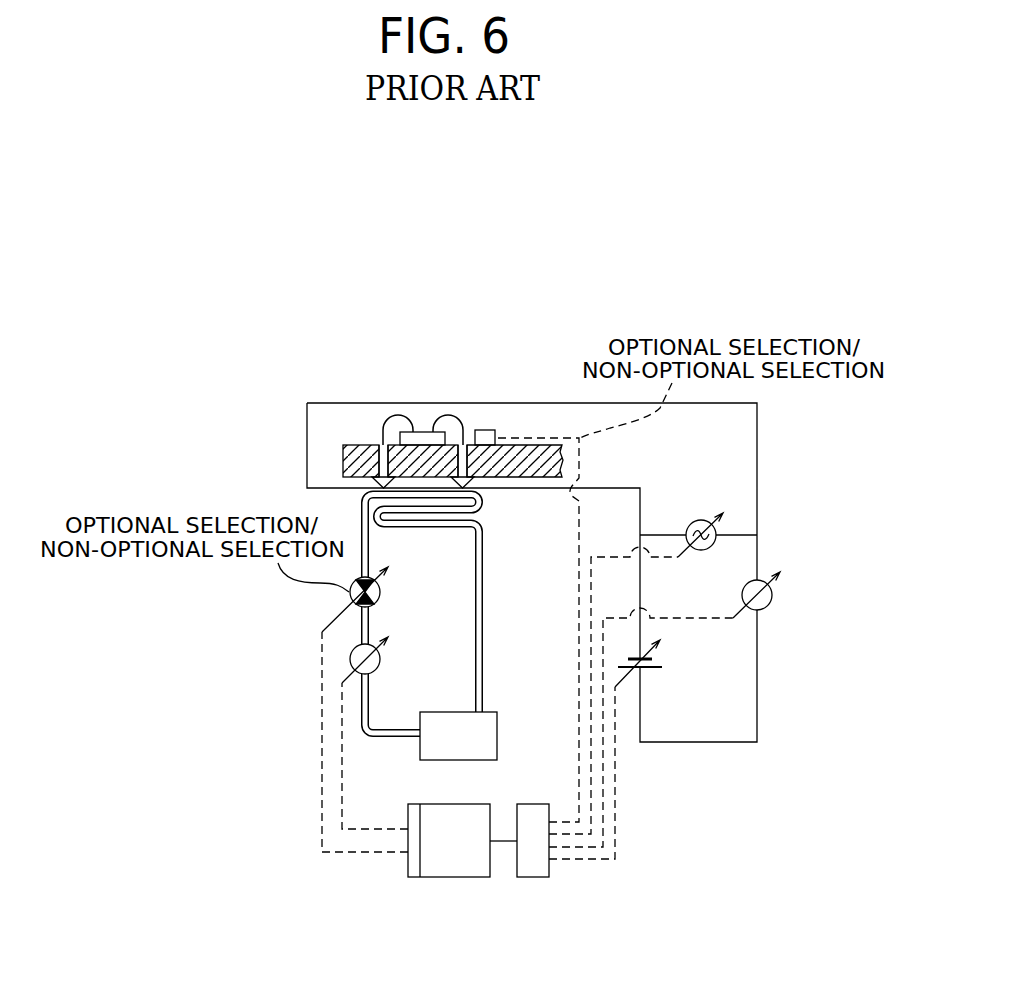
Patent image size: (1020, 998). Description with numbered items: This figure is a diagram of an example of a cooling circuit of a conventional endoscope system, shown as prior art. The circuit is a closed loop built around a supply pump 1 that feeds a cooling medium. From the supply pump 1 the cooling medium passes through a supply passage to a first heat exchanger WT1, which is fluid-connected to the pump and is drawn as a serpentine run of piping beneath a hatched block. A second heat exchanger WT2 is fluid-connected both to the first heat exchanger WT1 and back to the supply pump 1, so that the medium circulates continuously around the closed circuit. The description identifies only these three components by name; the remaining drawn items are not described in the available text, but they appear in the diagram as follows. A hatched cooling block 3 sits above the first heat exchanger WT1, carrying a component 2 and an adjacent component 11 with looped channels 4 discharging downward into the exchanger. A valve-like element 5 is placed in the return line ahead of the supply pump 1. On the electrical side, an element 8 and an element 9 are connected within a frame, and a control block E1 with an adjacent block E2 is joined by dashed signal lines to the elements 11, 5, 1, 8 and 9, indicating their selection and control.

The supply pump 1 is at (380, 668).
The heat-generating component 2 is at (422, 422).
The cooling plate / heat sink 3 is at (355, 449).
The coolant passage 4 is at (460, 422).
The flow control valve 5 is at (380, 592).
The power supply 8 is at (700, 520).
The ammeter 9 is at (768, 606).
The temperature sensor 11 is at (486, 430).
The first heat exchanger WT1 is at (502, 508).
The second heat exchanger WT2 is at (458, 736).
The control unit (CPU) E1 is at (415, 870).
The interface unit E2 is at (537, 863).